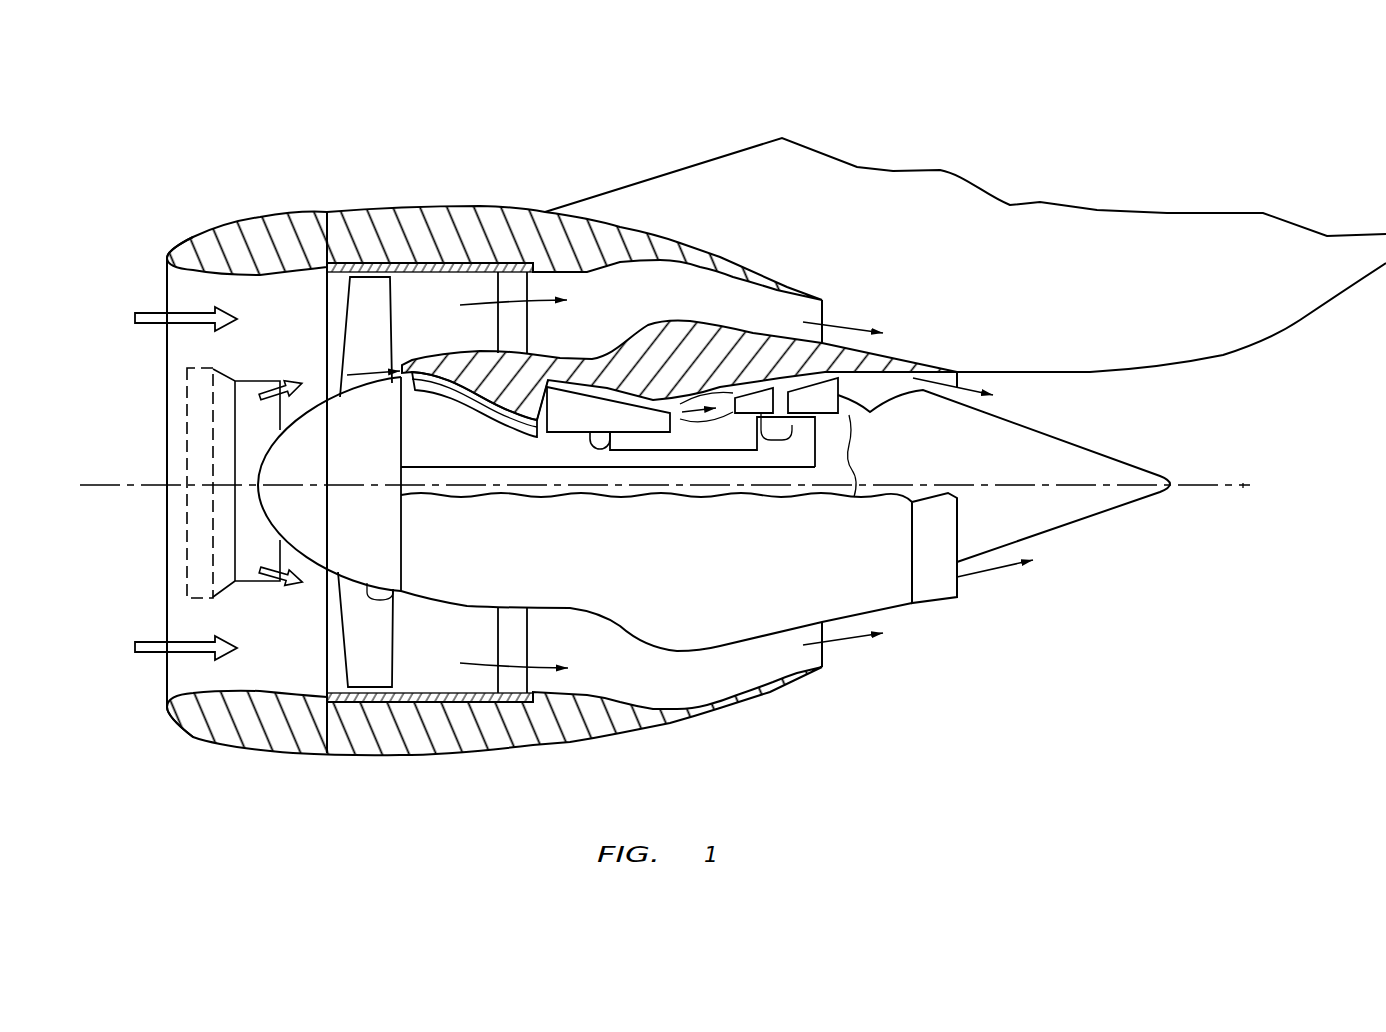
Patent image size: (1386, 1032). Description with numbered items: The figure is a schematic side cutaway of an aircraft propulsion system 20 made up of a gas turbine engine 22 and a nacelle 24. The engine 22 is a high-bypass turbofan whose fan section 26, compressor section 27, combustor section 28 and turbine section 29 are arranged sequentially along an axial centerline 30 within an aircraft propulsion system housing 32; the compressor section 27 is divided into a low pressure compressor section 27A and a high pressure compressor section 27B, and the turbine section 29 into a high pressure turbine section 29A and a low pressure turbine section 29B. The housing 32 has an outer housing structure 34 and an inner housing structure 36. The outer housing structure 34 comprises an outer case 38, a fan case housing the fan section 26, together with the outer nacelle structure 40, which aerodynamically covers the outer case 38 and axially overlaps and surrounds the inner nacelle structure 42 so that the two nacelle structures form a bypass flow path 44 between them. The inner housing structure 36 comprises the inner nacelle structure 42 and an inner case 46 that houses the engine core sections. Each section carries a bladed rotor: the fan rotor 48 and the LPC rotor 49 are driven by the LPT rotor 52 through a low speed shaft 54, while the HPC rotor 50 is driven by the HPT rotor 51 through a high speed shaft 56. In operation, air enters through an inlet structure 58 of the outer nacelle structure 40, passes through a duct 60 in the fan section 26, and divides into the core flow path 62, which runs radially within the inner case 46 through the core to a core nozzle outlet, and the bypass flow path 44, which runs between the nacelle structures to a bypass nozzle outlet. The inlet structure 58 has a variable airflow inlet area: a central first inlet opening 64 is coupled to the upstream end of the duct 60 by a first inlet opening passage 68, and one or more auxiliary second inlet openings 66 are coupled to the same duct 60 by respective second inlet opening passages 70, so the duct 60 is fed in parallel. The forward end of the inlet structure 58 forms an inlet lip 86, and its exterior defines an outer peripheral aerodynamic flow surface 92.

The aircraft propulsion system 20 is at (168, 154).
The gas turbine engine 22 is at (308, 672).
The nacelle 24 is at (470, 196).
The fan section 26 is at (407, 674).
The compressor section 27 is at (433, 537).
The low pressure compressor (LPC) section 27A is at (462, 442).
The high pressure compressor (HPC) section 27B is at (606, 453).
The combustor section 28 is at (710, 442).
The turbine section 29 is at (723, 537).
The high pressure turbine (HPT) section 29A is at (766, 440).
The low pressure turbine (LPT) section 29B is at (823, 440).
The axial centerline 30 is at (1243, 488).
The aircraft propulsion system housing 32 is at (414, 180).
The outer housing structure 34 is at (495, 212).
The inner housing structure 36 is at (687, 319).
The outer case 38 is at (346, 240).
The outer nacelle structure 40 is at (540, 212).
The inner nacelle structure 42 is at (737, 326).
The bypass flow path 44 is at (413, 335).
The inner case 46 is at (610, 383).
The fan rotor 48 is at (397, 598).
The LPC rotor 49 is at (517, 438).
The HPC rotor 50 is at (630, 431).
The HPT rotor 51 is at (830, 428).
The LPT rotor 52 is at (867, 407).
The low speed shaft 54 is at (587, 448).
The high speed shaft 56 is at (643, 453).
The inlet structure 58 is at (262, 212).
The duct 60 is at (374, 704).
The core flow path 62 is at (858, 387).
The first inlet opening 64 is at (165, 292).
The second inlet opening 66 is at (185, 430).
The first inlet opening passage 68 is at (291, 333).
The second inlet opening passage 70 is at (222, 597).
The inlet lip 86 is at (167, 257).
The outer peripheral aerodynamic flow surface 92 is at (207, 748).